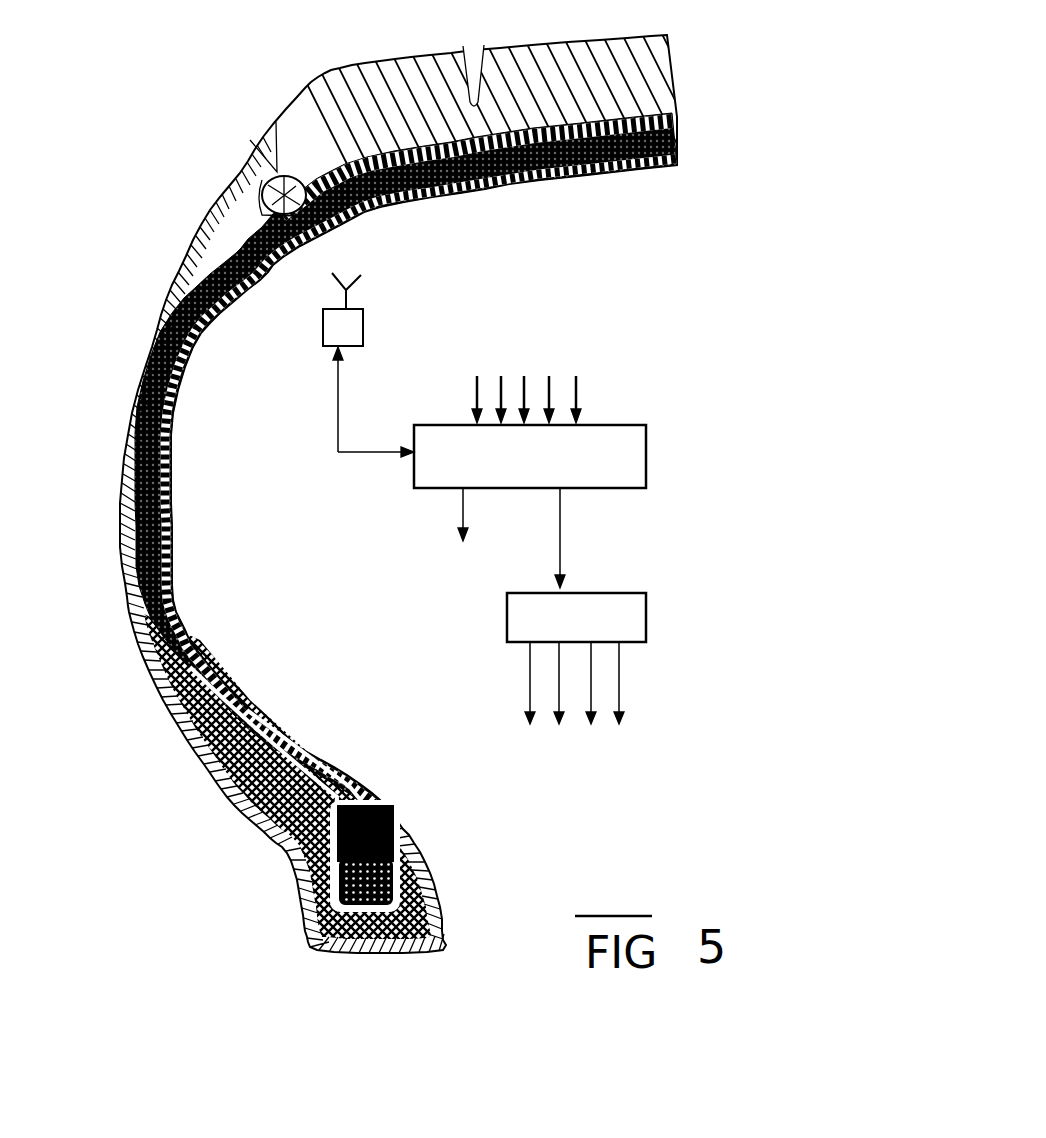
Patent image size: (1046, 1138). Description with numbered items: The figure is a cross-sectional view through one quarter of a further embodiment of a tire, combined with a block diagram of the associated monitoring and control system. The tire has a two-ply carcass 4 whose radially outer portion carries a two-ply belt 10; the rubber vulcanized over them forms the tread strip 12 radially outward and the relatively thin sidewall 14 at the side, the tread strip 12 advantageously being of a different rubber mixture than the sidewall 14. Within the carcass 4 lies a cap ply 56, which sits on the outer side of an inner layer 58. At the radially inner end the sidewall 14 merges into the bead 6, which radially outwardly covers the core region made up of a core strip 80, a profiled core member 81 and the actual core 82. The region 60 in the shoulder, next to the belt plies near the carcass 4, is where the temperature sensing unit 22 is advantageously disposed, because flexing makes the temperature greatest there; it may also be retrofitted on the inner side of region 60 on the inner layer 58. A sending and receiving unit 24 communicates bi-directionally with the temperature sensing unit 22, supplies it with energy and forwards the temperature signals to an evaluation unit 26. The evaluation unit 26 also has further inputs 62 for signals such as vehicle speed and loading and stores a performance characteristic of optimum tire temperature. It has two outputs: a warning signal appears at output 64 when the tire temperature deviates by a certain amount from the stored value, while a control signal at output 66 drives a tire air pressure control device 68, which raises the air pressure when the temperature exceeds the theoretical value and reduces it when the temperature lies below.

The carcass 4 is at (677, 143).
The bead 6 is at (253, 825).
The core strip 80 is at (210, 780).
The profiled core member 81 is at (287, 860).
The core 82 is at (293, 897).
The belt 10 is at (678, 125).
The tread strip 12 is at (633, 80).
The sidewall 14 is at (150, 347).
The temperature sensing unit 22 is at (262, 210).
The sending and receiving unit 24 is at (348, 333).
The evaluation unit 26 is at (621, 460).
The cap ply 56 is at (677, 155).
The inner layer 58 is at (677, 167).
The region 60 is at (262, 178).
The inputs 62 is at (581, 363).
The output 64 is at (458, 513).
The output 66 is at (568, 543).
The tire air pressure control device 68 is at (629, 627).